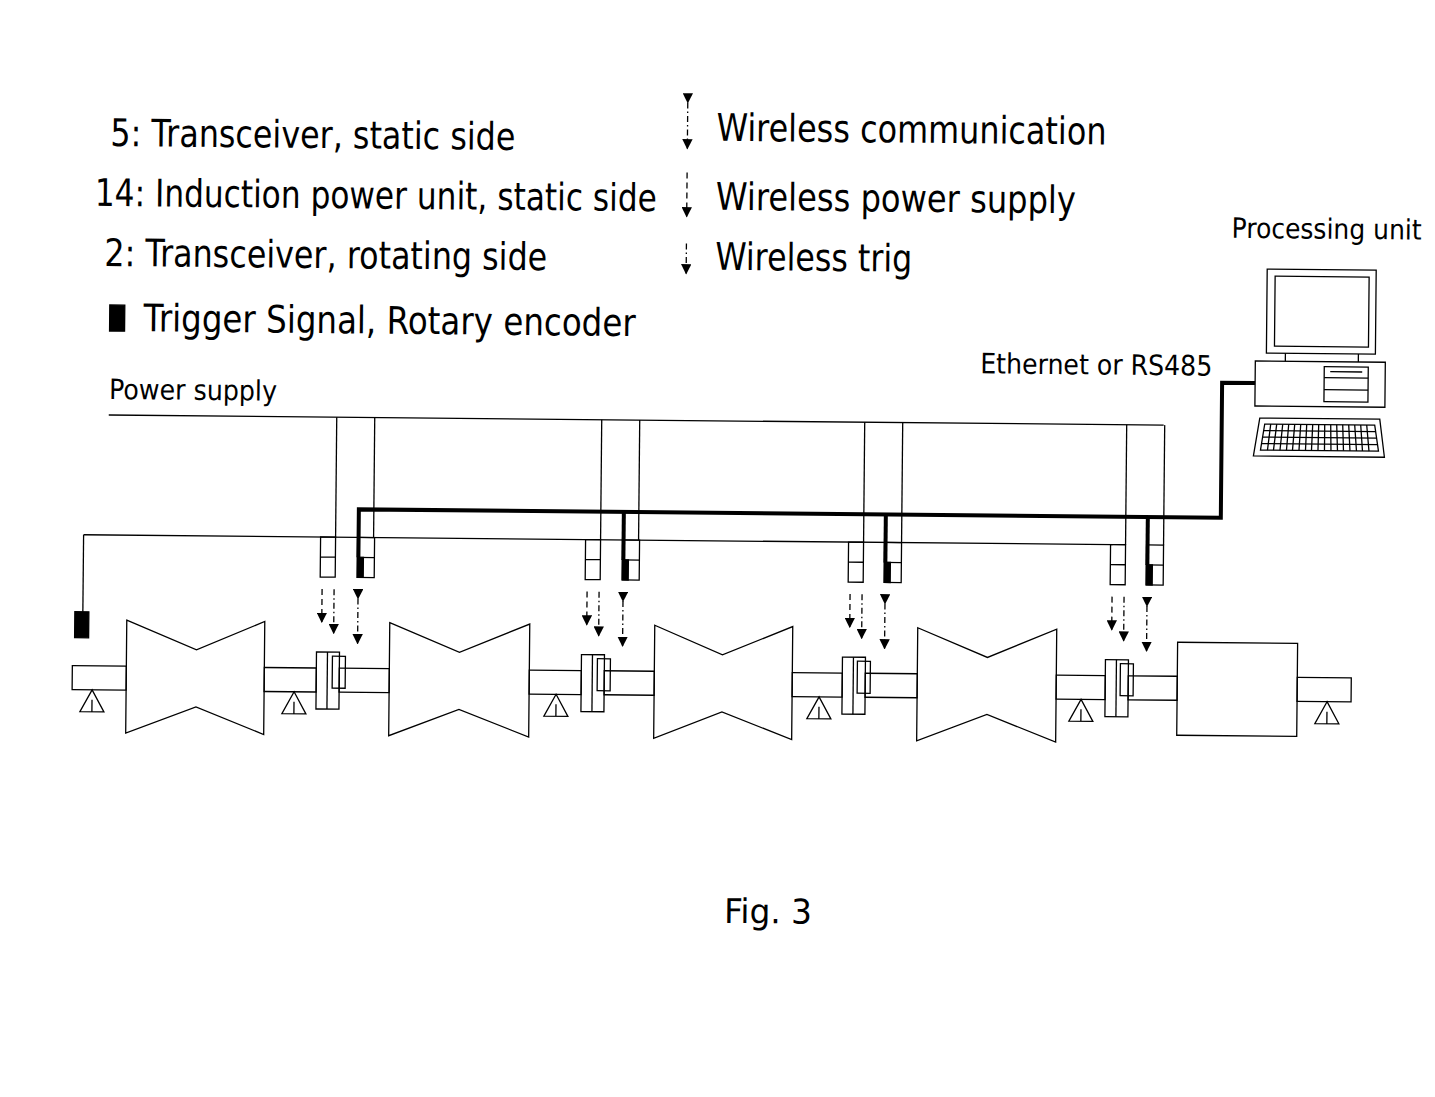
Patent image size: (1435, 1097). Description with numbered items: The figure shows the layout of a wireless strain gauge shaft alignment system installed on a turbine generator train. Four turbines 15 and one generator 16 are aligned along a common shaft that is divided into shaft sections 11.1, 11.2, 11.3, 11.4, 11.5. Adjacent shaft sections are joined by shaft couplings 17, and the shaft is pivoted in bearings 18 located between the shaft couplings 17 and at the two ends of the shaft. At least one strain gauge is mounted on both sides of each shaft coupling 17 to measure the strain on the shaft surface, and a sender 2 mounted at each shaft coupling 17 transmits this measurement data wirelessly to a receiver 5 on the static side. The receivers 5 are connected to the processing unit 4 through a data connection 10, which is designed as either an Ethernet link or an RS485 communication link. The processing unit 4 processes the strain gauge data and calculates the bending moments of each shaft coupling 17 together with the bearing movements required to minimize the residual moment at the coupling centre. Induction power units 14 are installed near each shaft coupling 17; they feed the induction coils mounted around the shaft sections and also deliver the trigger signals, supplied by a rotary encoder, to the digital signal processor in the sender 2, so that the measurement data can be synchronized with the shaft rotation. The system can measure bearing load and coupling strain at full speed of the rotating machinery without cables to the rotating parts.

The sender 2 is at (322, 668).
The processing unit 4 is at (1390, 339).
The receiver 5 is at (374, 568).
The data connection 10 is at (1222, 478).
The shaft section 11.1 is at (90, 671).
The shaft section 11.2 is at (356, 671).
The shaft section 11.3 is at (620, 671).
The shaft section 11.4 is at (883, 671).
The shaft section 11.5 is at (1143, 671).
The induction power unit 14 is at (320, 562).
The turbine 15 is at (197, 711).
The generator 16 is at (1246, 722).
The shaft coupling 17 is at (331, 712).
The bearing 18 is at (93, 717).